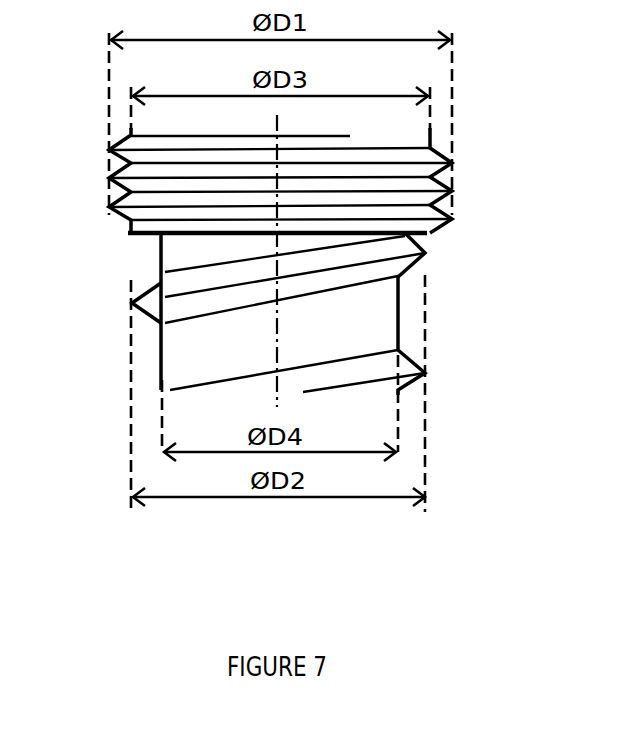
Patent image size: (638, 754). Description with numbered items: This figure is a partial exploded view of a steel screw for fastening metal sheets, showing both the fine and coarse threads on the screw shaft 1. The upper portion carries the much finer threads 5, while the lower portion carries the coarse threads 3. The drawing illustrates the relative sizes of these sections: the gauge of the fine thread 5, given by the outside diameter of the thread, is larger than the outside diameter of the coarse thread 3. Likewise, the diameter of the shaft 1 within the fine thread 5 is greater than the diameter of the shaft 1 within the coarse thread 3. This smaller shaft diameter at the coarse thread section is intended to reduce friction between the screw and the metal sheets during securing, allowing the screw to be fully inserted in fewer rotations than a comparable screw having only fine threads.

The shaft 1 is at (400, 314).
The coarse threads 3 is at (133, 303).
The fine threads 5 is at (113, 172).